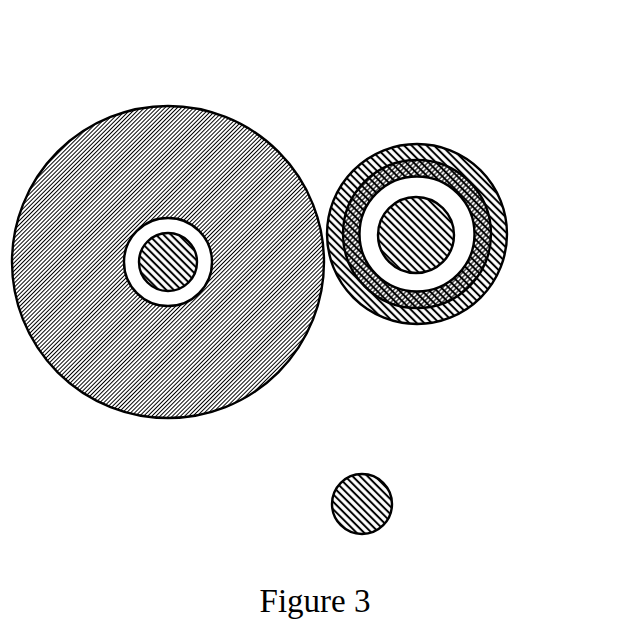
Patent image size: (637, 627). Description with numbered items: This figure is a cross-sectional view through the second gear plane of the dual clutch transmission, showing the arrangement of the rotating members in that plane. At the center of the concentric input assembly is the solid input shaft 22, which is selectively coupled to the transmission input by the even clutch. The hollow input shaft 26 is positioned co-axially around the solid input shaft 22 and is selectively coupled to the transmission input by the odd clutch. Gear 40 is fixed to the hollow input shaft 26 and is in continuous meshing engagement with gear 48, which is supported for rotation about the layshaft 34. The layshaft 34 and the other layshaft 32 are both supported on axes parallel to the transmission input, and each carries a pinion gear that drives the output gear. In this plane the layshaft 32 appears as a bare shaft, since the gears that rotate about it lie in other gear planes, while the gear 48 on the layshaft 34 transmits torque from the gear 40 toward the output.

The solid input shaft 22 is at (448, 253).
The hollow input shaft 26 is at (486, 206).
The layshaft 32 is at (392, 495).
The layshaft 34 is at (138, 247).
The gear 40 is at (366, 158).
The gear 48 is at (262, 134).